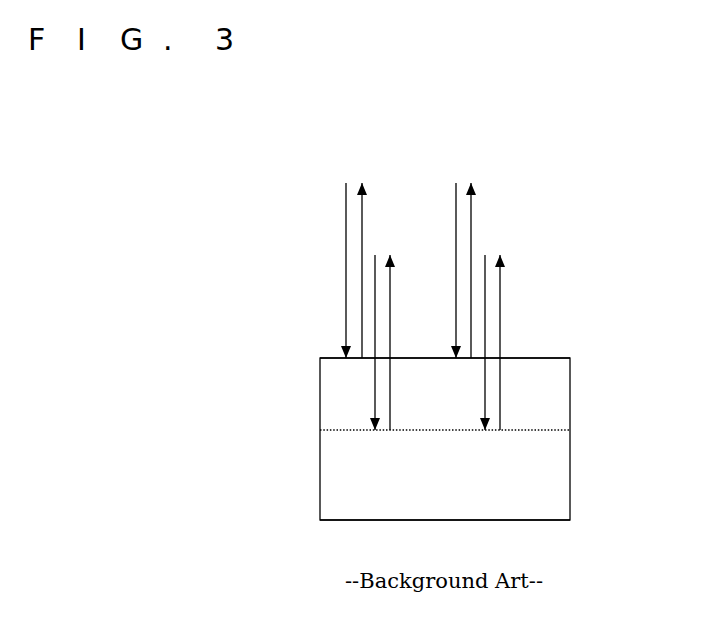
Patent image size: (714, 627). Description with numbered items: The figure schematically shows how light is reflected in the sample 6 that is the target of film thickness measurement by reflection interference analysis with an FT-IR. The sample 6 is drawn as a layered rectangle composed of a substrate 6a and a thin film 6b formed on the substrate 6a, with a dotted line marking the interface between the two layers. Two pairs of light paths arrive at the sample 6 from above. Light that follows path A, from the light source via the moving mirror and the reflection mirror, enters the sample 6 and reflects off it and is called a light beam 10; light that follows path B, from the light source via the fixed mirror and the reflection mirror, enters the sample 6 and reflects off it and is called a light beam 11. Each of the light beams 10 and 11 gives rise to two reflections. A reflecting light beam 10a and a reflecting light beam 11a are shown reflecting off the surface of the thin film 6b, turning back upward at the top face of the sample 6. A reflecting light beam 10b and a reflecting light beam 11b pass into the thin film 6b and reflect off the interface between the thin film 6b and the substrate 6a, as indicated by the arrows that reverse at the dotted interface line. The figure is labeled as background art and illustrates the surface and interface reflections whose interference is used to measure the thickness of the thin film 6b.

The sample 6 is at (320, 423).
The substrate 6a is at (560, 463).
The thin film 6b is at (560, 398).
The light beam 10 is at (385, 178).
The reflecting light beam 10a is at (363, 238).
The reflecting light beam 10b is at (418, 323).
The light beam 11 is at (494, 178).
The reflecting light beam 11a is at (473, 238).
The reflecting light beam 11b is at (530, 323).